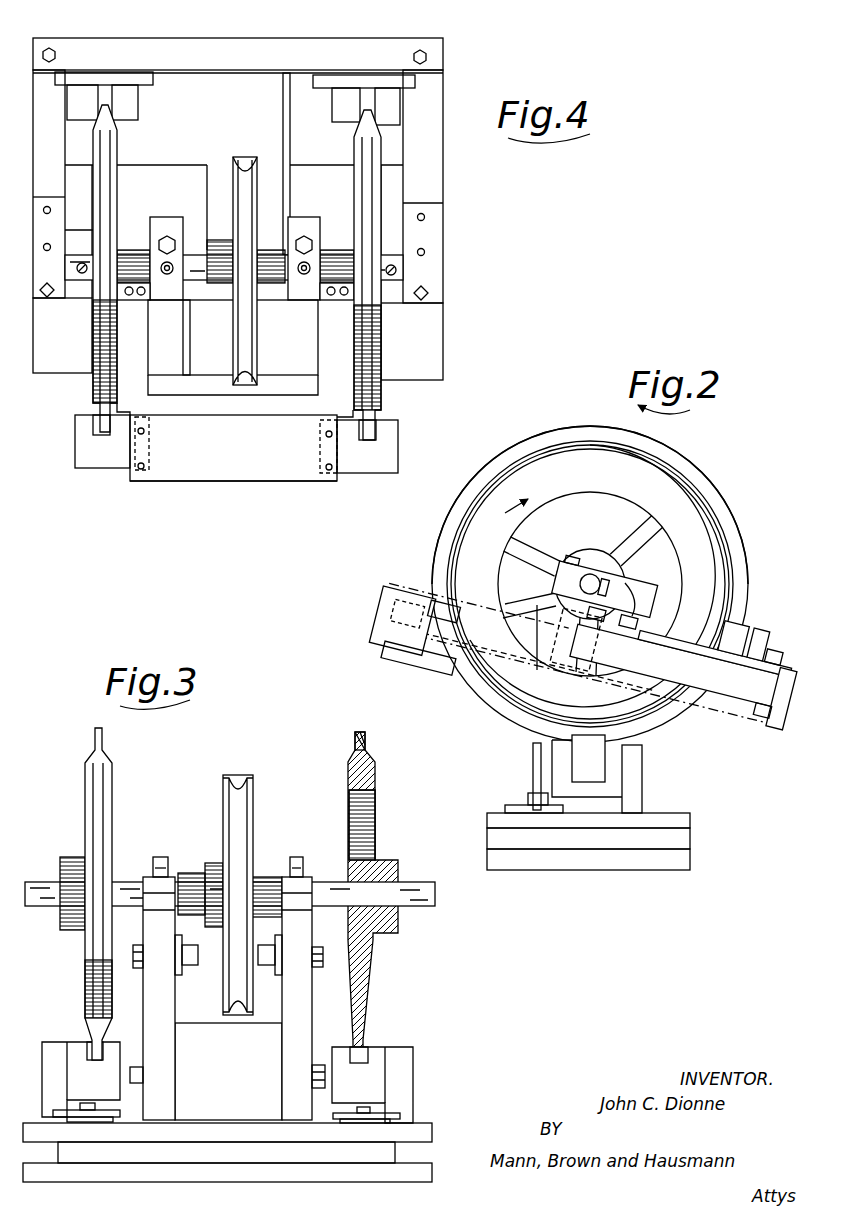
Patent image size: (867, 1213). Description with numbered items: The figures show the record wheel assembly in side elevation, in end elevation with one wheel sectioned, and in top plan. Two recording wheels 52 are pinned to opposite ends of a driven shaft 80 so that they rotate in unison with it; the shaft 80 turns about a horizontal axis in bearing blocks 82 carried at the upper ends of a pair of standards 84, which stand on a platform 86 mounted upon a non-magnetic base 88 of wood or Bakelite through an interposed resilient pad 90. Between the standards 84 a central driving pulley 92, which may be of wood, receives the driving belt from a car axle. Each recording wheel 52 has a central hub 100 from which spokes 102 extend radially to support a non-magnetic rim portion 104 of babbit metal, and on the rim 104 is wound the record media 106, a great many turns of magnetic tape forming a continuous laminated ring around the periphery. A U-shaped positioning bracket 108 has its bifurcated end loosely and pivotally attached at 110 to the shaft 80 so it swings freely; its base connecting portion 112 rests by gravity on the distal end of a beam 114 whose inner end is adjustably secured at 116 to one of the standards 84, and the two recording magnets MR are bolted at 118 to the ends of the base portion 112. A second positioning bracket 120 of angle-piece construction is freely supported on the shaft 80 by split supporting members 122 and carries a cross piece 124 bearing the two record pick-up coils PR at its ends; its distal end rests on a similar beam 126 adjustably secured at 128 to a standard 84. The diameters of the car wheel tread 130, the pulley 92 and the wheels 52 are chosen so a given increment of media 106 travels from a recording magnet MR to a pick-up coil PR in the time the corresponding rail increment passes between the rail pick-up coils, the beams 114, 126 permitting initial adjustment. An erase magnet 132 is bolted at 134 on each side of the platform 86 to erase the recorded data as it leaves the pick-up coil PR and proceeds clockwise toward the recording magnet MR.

In FIG. 4, the recording wheel 52 is at (120, 153).
In FIG. 2, the recording wheel 52 is at (743, 523).
In FIG. 3, the recording wheel 52 is at (116, 813).
In FIG. 4, the driven shaft 80 is at (335, 256).
In FIG. 2, the driven shaft 80 is at (603, 596).
In FIG. 3, the driven shaft 80 is at (436, 896).
In FIG. 4, the bearing blocks 82 is at (176, 217).
In FIG. 3, the bearing blocks 82 is at (146, 908).
In FIG. 2, the standards 84 is at (643, 772).
In FIG. 3, the standards 84 is at (150, 1066).
In FIG. 4, the platform 86 is at (428, 359).
In FIG. 2, the platform 86 is at (680, 818).
In FIG. 3, the platform 86 is at (215, 1123).
In FIG. 2, the base 88 is at (683, 864).
In FIG. 3, the base 88 is at (433, 1180).
In FIG. 2, the resilient pad 90 is at (680, 841).
In FIG. 3, the resilient pad 90 is at (398, 1153).
In FIG. 4, the central driving pulley 92 is at (244, 155).
In FIG. 3, the central driving pulley 92 is at (254, 832).
In FIG. 2, the central hub 100 is at (592, 552).
In FIG. 2, the spokes 102 is at (543, 548).
In FIG. 2, the rim portion 104 is at (660, 488).
In FIG. 2, the record media 106 is at (655, 443).
In FIG. 3, the record media 106 is at (366, 740).
In FIG. 4, the positioning bracket 108 is at (272, 485).
In FIG. 2, the positioning bracket 108 is at (507, 598).
In FIG. 4, the pivotal attachment 110 is at (128, 301).
In FIG. 4, the base connecting portion 112 is at (150, 483).
In FIG. 4, the beam 114 is at (187, 352).
In FIG. 2, the beam 114 is at (408, 700).
In FIG. 3, the beam 114 is at (180, 968).
In FIG. 2, the adjustable securing point 116 is at (576, 639).
In FIG. 3, the adjustable securing point 116 is at (135, 968).
In FIG. 4, the securing point for recording magnets 118 is at (146, 431).
In FIG. 4, the second positioning bracket 120 is at (304, 40).
In FIG. 2, the second positioning bracket 120 is at (582, 660).
In FIG. 4, the split supporting members 122 is at (60, 235).
In FIG. 2, the split supporting members 122 is at (632, 590).
In FIG. 4, the cross piece 124 is at (238, 40).
In FIG. 2, the cross piece 124 is at (737, 652).
In FIG. 4, the beam 126 is at (287, 125).
In FIG. 2, the beam 126 is at (800, 722).
In FIG. 3, the beam 126 is at (277, 975).
In FIG. 3, the adjustable securing point 128 is at (317, 967).
In FIG. 3, the car wheel tread 130 is at (227, 1076).
In FIG. 2, the erase magnet 132 is at (600, 764).
In FIG. 3, the erase magnet 132 is at (73, 1046).
In FIG. 2, the securing point for erase magnet 134 is at (532, 800).
In FIG. 3, the securing point for erase magnet 134 is at (86, 1105).
In FIG. 4, the record pick-up coil PR is at (139, 105).
In FIG. 2, the record pick-up coil PR is at (749, 636).
In FIG. 4, the recording magnet MR is at (115, 462).
In FIG. 2, the recording magnet MR is at (415, 624).